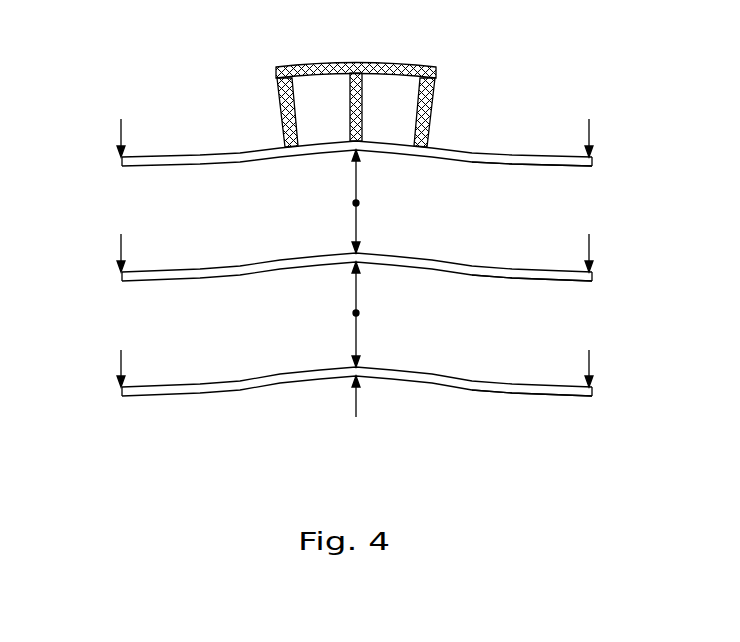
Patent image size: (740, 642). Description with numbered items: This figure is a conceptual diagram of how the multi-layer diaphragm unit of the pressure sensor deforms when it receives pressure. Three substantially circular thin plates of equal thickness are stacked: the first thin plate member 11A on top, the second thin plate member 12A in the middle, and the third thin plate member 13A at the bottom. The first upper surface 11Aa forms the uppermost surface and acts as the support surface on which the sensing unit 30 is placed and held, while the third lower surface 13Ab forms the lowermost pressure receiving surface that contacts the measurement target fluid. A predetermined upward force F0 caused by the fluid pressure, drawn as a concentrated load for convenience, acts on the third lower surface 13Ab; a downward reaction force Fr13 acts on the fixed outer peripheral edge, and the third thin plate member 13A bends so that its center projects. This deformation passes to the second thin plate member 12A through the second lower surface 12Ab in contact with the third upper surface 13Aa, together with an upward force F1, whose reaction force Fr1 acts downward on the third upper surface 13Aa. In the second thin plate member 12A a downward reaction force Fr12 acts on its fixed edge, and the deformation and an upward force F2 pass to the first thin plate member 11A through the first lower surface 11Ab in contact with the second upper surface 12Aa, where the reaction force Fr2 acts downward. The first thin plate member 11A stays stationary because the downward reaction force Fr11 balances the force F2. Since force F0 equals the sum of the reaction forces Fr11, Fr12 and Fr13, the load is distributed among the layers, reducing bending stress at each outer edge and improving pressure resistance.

The sensing unit 30 is at (357, 62).
The first thin plate member 11A is at (357, 146).
The first upper surface 11Aa is at (471, 153).
The first lower surface 11Ab is at (507, 164).
The second thin plate member 12A is at (357, 262).
The second upper surface 12Aa is at (471, 266).
The second lower surface 12Ab is at (507, 278).
The third thin plate member 13A is at (357, 372).
The third upper surface 13Aa is at (471, 381).
The third lower surface 13Ab is at (507, 393).
The reaction force Fr11 is at (334, 124).
The reaction force Fr12 is at (334, 239).
The reaction force Fr13 is at (334, 354).
The force F2 is at (336, 178).
The reaction force Fr2 is at (381, 228).
The force F1 is at (338, 289).
The reaction force Fr1 is at (378, 340).
The force F0 is at (356, 414).